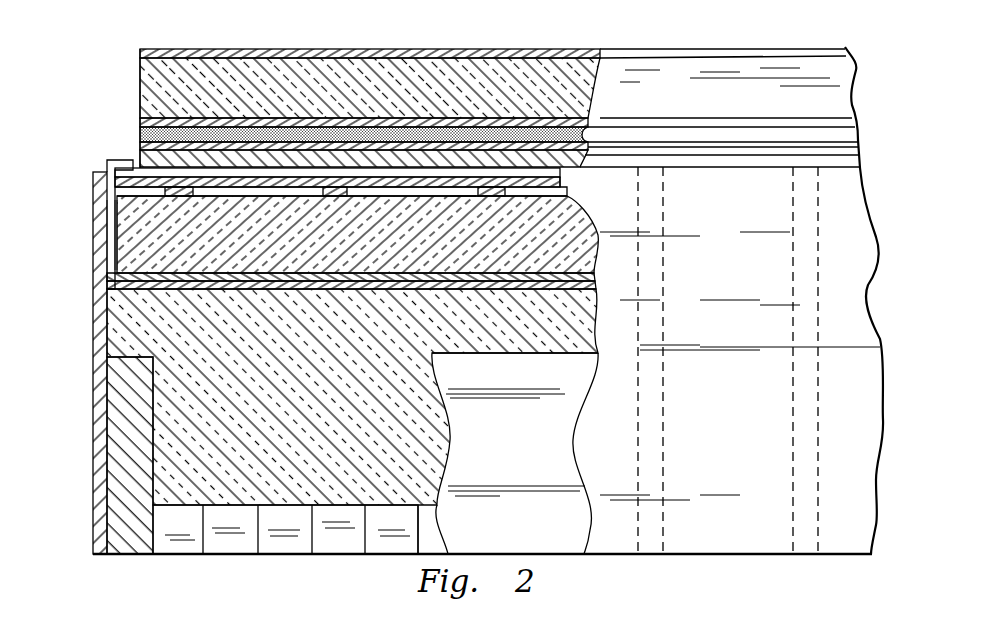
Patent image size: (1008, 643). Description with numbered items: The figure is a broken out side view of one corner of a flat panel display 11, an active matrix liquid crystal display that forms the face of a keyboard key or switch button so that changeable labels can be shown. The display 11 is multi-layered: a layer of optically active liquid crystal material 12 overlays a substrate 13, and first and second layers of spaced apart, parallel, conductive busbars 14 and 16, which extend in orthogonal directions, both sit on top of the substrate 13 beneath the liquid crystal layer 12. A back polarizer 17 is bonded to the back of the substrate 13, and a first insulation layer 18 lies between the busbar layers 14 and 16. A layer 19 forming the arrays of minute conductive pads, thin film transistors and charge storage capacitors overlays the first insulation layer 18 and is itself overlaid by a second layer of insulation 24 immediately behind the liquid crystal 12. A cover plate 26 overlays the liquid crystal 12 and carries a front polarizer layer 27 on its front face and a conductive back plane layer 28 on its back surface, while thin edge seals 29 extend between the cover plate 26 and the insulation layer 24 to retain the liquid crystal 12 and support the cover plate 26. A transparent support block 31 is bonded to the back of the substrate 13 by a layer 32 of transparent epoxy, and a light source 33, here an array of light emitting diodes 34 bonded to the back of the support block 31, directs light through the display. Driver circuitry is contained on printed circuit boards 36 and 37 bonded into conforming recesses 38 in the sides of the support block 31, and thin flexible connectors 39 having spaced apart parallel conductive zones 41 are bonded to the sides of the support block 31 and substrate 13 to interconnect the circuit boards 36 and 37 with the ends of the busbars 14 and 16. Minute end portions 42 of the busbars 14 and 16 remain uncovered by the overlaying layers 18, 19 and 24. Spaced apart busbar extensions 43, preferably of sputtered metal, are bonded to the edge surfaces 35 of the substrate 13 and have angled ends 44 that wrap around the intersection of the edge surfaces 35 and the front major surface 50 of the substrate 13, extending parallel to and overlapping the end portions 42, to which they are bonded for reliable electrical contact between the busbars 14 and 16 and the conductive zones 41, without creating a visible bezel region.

The flat panel display 11 is at (119, 61).
The layer of optically active material 12 is at (383, 142).
The substrate 13 is at (357, 234).
The first layer of busbars 14 is at (337, 197).
The second layer of busbars 16 is at (122, 170).
The back polarizer 17 is at (113, 283).
The first insulation layer 18 is at (134, 193).
The layer forming array of conductive pads, thin film transistors and charge storage 19 is at (322, 158).
The second layer of insulation 24 is at (239, 134).
The cover plate 26 is at (452, 66).
The front polarizer layer 27 is at (576, 50).
The conductive back plane layer 28 is at (639, 127).
The edge seals 29 is at (157, 127).
The transparent support block 31 is at (352, 397).
The layer of transparent epoxy 32 is at (122, 298).
The light source 33 is at (224, 568).
The light emitting diodes 34 is at (325, 555).
The edge surfaces 35 is at (112, 208).
The printed circuit board 36 is at (515, 453).
The printed circuit board 37 is at (99, 477).
The recesses 38 is at (153, 406).
The flexible connectors 39 is at (73, 351).
The conductive zones 41 is at (665, 318).
The end portions 42 is at (130, 202).
The busbar extensions 43 is at (108, 266).
The angled ends 44 is at (125, 146).
The front major surface 50 is at (462, 193).